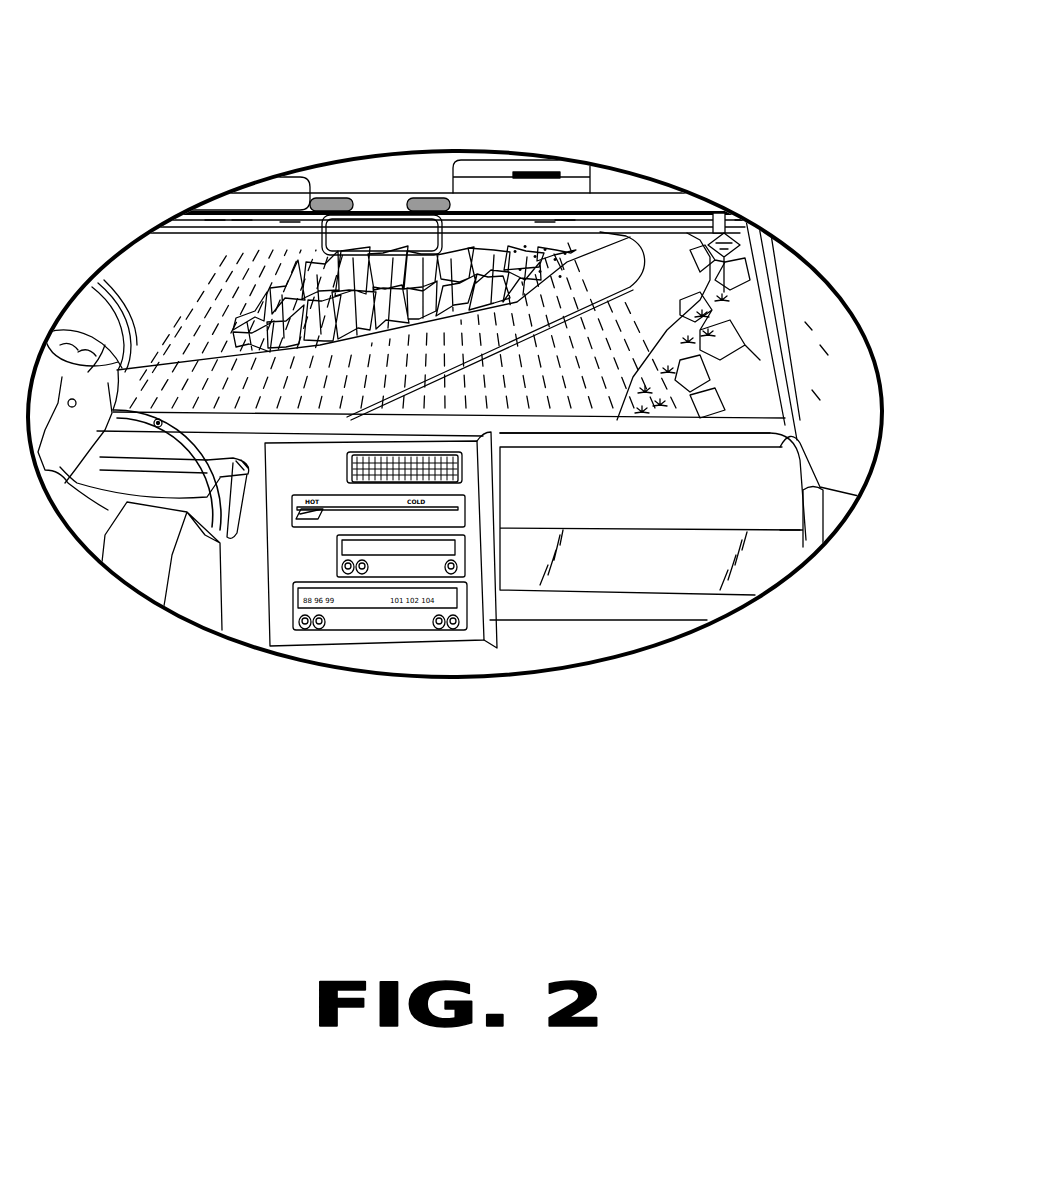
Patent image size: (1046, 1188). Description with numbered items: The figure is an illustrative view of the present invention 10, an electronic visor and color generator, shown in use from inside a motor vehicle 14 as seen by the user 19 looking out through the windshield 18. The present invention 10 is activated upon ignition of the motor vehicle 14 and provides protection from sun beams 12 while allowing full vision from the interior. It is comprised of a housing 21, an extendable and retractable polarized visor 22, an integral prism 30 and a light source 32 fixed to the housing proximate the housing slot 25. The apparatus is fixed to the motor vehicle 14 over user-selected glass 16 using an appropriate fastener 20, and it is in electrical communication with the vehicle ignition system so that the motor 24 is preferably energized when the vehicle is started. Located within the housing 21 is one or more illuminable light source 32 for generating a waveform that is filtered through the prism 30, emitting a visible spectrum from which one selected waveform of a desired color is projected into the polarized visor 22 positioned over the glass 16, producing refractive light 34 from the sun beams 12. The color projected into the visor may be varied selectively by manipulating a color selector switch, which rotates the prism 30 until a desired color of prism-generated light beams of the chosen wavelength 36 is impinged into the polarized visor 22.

The present invention 10 is at (181, 125).
The sun beams 12 is at (207, 290).
The motor vehicle 14 is at (428, 173).
The glass 16 is at (740, 257).
The windshield 18 is at (180, 305).
The user 19 is at (198, 578).
The fastener 20 is at (688, 208).
The housing 21 is at (371, 214).
The polarized visor 22 is at (603, 266).
The motor 24 is at (742, 232).
The housing slot 25 is at (566, 220).
The prism 30 is at (216, 228).
The light source 32 is at (242, 218).
The refractive light 34 is at (188, 310).
The wavelength 36 is at (290, 262).